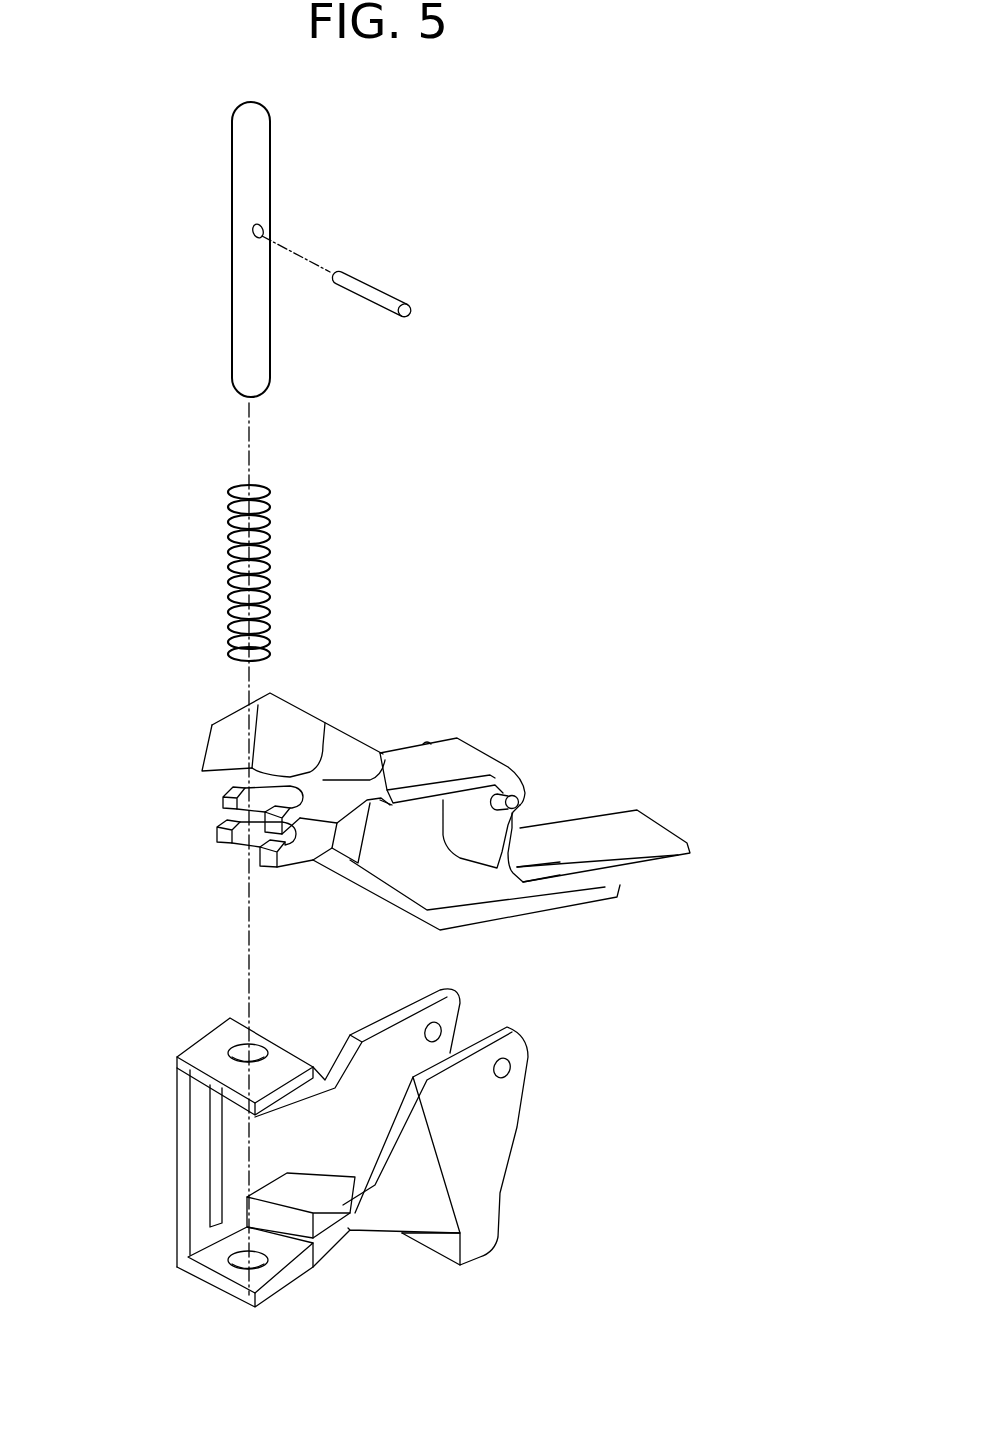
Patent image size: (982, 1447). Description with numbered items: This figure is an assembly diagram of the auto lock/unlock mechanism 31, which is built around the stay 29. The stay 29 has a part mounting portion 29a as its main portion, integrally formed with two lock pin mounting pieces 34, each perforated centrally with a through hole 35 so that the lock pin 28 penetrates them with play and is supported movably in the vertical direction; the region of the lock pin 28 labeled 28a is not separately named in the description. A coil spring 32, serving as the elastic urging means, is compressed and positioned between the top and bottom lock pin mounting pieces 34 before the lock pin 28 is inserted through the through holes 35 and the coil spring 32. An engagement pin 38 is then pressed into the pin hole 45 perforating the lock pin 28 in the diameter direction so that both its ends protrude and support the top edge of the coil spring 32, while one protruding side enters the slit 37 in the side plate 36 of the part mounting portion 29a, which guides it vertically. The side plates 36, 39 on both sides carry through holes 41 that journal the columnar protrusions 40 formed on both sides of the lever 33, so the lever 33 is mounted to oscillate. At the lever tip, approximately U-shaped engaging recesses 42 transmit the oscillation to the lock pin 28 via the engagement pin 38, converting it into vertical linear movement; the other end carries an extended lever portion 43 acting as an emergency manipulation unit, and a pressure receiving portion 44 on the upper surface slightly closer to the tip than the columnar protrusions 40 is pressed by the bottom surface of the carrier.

The lock pin 28 is at (242, 323).
The lock pin upper portion 28a is at (245, 168).
The pin hole 45 is at (264, 230).
The engagement pin 38 is at (390, 290).
The coil spring 32 is at (272, 519).
The lever 33 is at (395, 738).
The pressure receiving portion 44 is at (463, 765).
The columnar protrusions 40 is at (427, 742).
The extended lever portion 43 is at (614, 845).
The engaging recesses 42 is at (223, 803).
The auto lock/unlock mechanism 31 is at (598, 645).
The stay 29 is at (349, 1156).
The part mounting portion 29a is at (477, 1240).
The lock pin mounting pieces 34 is at (213, 1040).
The through holes 35 is at (257, 1048).
The side plate 36 is at (230, 1170).
The slit 37 is at (213, 1130).
The side plate 39 is at (490, 1160).
The through holes 41 is at (441, 1032).